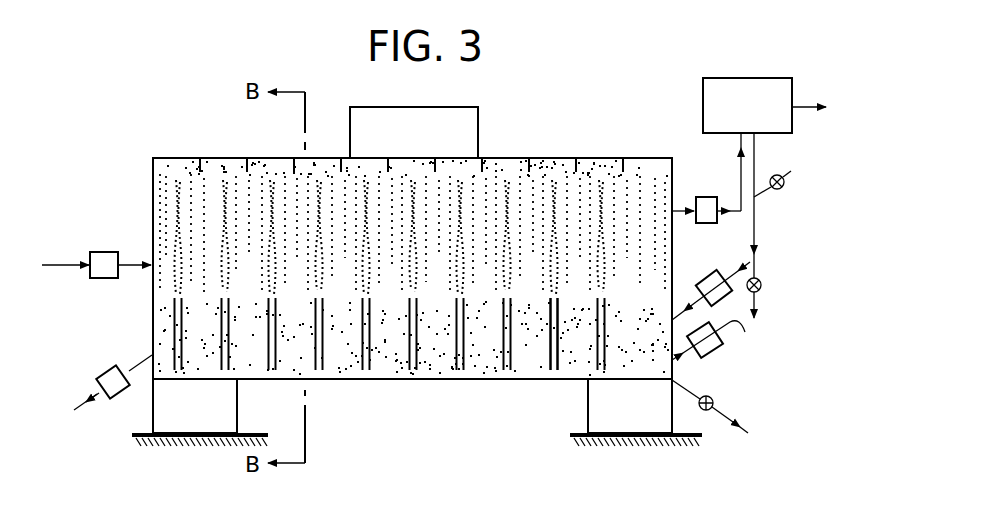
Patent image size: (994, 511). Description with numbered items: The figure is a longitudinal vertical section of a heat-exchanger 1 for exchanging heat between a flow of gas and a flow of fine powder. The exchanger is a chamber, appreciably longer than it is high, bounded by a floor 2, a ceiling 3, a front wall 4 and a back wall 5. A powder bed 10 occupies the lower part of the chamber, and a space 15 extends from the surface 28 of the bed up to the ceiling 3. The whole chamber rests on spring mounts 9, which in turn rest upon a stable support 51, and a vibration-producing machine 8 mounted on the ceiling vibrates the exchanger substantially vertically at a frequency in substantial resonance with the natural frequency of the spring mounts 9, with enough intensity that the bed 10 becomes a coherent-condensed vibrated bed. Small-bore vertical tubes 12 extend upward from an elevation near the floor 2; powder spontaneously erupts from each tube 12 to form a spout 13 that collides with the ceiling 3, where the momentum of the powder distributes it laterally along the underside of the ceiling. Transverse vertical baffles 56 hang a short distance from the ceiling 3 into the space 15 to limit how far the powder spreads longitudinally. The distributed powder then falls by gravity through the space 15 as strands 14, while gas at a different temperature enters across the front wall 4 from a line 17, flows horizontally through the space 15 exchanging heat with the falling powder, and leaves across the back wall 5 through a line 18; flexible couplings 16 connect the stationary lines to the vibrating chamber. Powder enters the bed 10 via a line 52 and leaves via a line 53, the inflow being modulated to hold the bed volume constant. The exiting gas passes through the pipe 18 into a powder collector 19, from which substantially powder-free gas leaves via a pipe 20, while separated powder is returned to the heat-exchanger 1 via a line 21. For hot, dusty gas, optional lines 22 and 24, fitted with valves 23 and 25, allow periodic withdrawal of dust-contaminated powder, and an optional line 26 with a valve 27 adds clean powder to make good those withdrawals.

The heat-exchanger 1 is at (612, 130).
The floor 2 is at (530, 380).
The ceiling 3 is at (558, 158).
The front wall 4 is at (153, 340).
The back wall 5 is at (678, 172).
The vibration-producing machine 8 is at (478, 119).
The spring mounts 9 is at (152, 403).
The powder bed 10 is at (655, 367).
The vertical tubes 12 is at (176, 304).
The spout 13 is at (175, 202).
The strands 14 is at (490, 196).
The space 15 is at (650, 228).
The flexible couplings 16 is at (109, 252).
The line 17 is at (66, 266).
The line 18 is at (741, 183).
The powder collector 19 is at (752, 78).
The pipe 20 is at (805, 98).
The line 21 is at (757, 162).
The line 22 is at (713, 397).
The valve 23 is at (707, 409).
The line 24 is at (758, 270).
The valve 25 is at (760, 289).
The line 26 is at (784, 178).
The valve 27 is at (777, 190).
The surface 28 is at (574, 332).
The stable support 51 is at (250, 432).
The line 52 is at (722, 333).
The line 53 is at (99, 392).
The baffles 56 is at (204, 166).